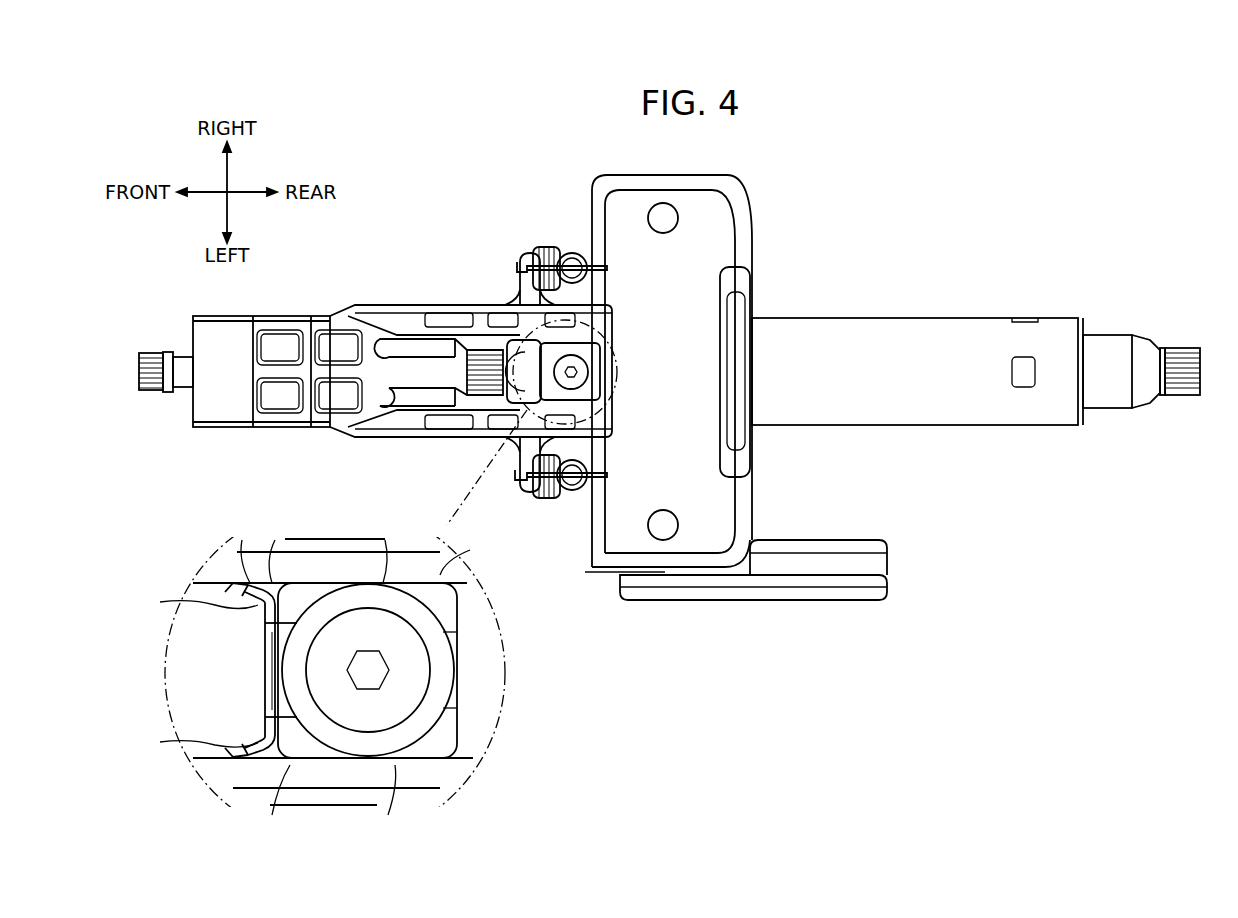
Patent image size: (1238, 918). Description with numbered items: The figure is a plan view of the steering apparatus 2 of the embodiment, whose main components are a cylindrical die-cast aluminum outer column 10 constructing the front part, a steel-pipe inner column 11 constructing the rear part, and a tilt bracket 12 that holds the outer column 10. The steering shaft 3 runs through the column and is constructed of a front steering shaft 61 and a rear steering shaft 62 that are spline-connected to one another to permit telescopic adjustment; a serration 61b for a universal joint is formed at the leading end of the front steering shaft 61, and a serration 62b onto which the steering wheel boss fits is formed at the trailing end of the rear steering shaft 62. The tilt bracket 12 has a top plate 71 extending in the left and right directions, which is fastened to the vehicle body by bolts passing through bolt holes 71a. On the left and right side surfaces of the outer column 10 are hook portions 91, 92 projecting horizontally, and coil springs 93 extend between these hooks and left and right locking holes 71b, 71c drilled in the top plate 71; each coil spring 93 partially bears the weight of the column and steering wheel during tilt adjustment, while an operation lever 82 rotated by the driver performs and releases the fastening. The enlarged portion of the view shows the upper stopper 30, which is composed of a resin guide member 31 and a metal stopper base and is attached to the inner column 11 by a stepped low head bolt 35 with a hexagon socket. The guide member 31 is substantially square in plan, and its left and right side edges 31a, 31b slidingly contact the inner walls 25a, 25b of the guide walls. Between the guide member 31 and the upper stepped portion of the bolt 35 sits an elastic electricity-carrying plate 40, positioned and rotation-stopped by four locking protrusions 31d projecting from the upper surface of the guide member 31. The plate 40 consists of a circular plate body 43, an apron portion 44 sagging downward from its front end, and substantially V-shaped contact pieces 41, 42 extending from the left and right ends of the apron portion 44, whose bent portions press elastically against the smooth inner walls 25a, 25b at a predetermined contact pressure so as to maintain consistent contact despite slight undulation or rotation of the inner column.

The steering apparatus 2 is at (945, 228).
The steering shaft 3 is at (1142, 368).
The outer column 10 is at (296, 314).
The inner column 11 is at (875, 316).
The tilt bracket 12 is at (748, 195).
The inner wall 25a is at (258, 755).
The inner wall 25b is at (265, 595).
The upper stopper 30 is at (540, 340).
The guide member 31 is at (420, 661).
The side edge 31a is at (393, 762).
The side edge 31b is at (332, 583).
The locking protrusion 31d is at (297, 597).
The stepped low head bolt 35 is at (437, 656).
The electricity-carrying plate 40 is at (458, 690).
The contact piece 41 is at (235, 742).
The contact piece 42 is at (235, 595).
The circular plate body 43 is at (390, 600).
The apron portion 44 is at (204, 671).
The front steering shaft 61 is at (161, 382).
The serration 61b is at (152, 356).
The rear steering shaft 62 is at (1104, 413).
The serration 62b is at (1182, 395).
The top plate 71 is at (668, 387).
The bolt hole 71a is at (665, 220).
The locking hole 71b is at (593, 505).
The locking hole 71c is at (585, 262).
The operation lever 82 is at (860, 542).
The hook portion 91 is at (525, 460).
The hook portion 92 is at (525, 286).
The coil spring 93 is at (535, 255).